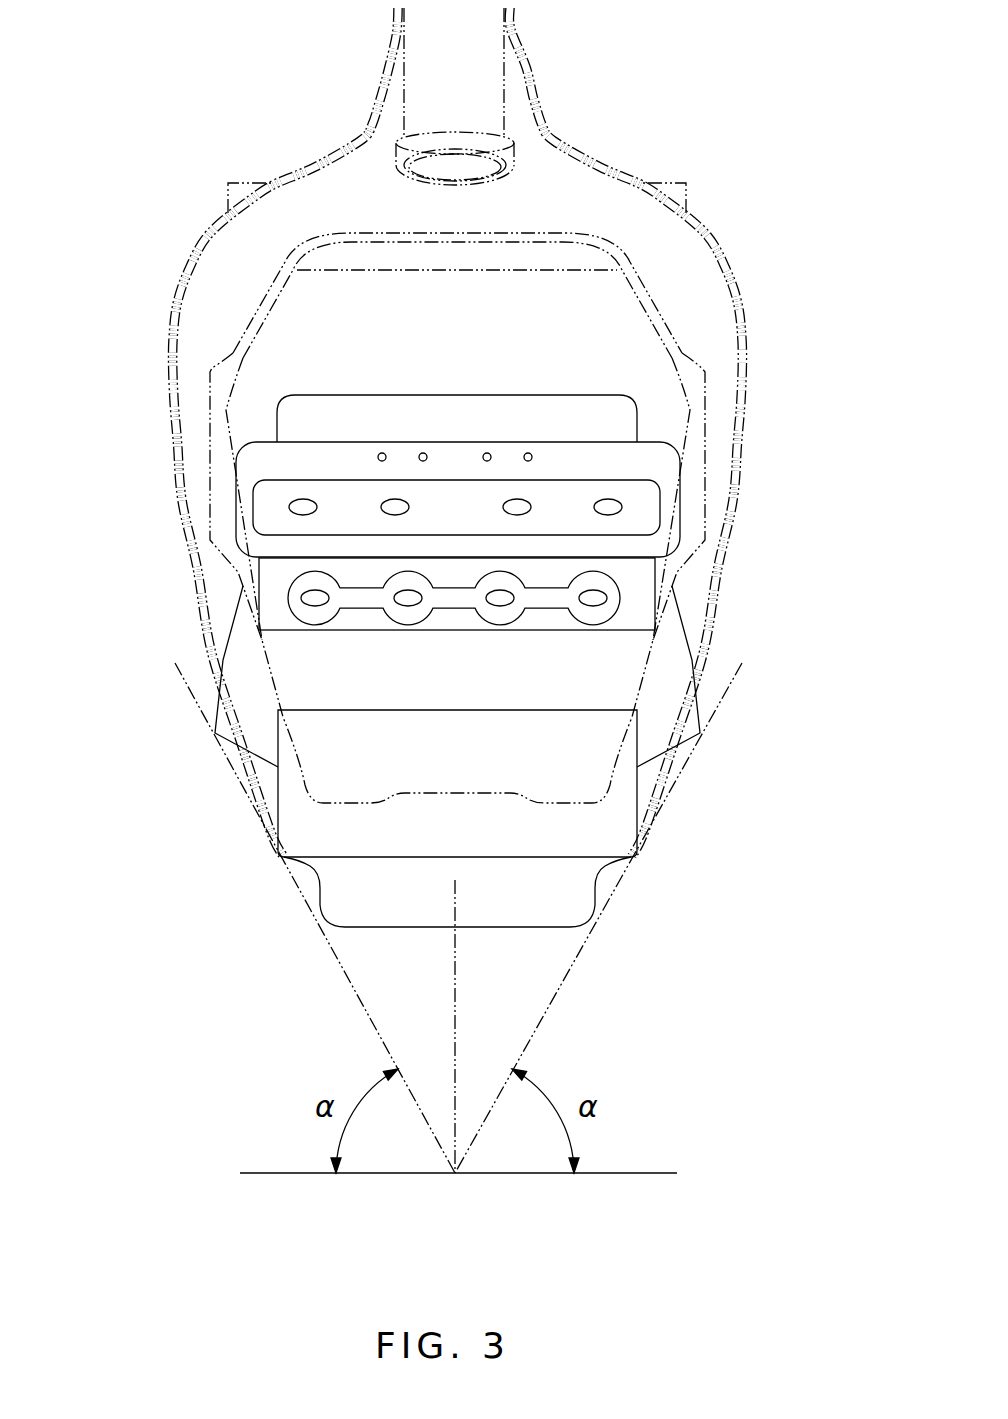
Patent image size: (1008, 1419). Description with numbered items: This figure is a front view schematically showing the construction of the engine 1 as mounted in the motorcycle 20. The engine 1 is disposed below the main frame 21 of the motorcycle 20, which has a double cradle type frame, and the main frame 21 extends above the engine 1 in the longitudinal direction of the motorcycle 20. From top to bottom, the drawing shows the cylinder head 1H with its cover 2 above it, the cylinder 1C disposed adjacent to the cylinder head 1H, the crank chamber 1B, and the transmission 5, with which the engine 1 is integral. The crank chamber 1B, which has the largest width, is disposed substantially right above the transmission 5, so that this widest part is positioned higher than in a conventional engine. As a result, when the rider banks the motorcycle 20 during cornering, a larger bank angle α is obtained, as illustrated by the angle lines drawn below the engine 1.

The motorcycle 20 is at (467, 432).
The main frame 21 is at (190, 316).
The engine 1 is at (404, 612).
The cylinder head 1H is at (348, 460).
The cylinder head cover 2 is at (465, 412).
The cylinder 1C is at (287, 582).
The crank chamber 1B is at (295, 665).
The transmission 5 is at (337, 767).